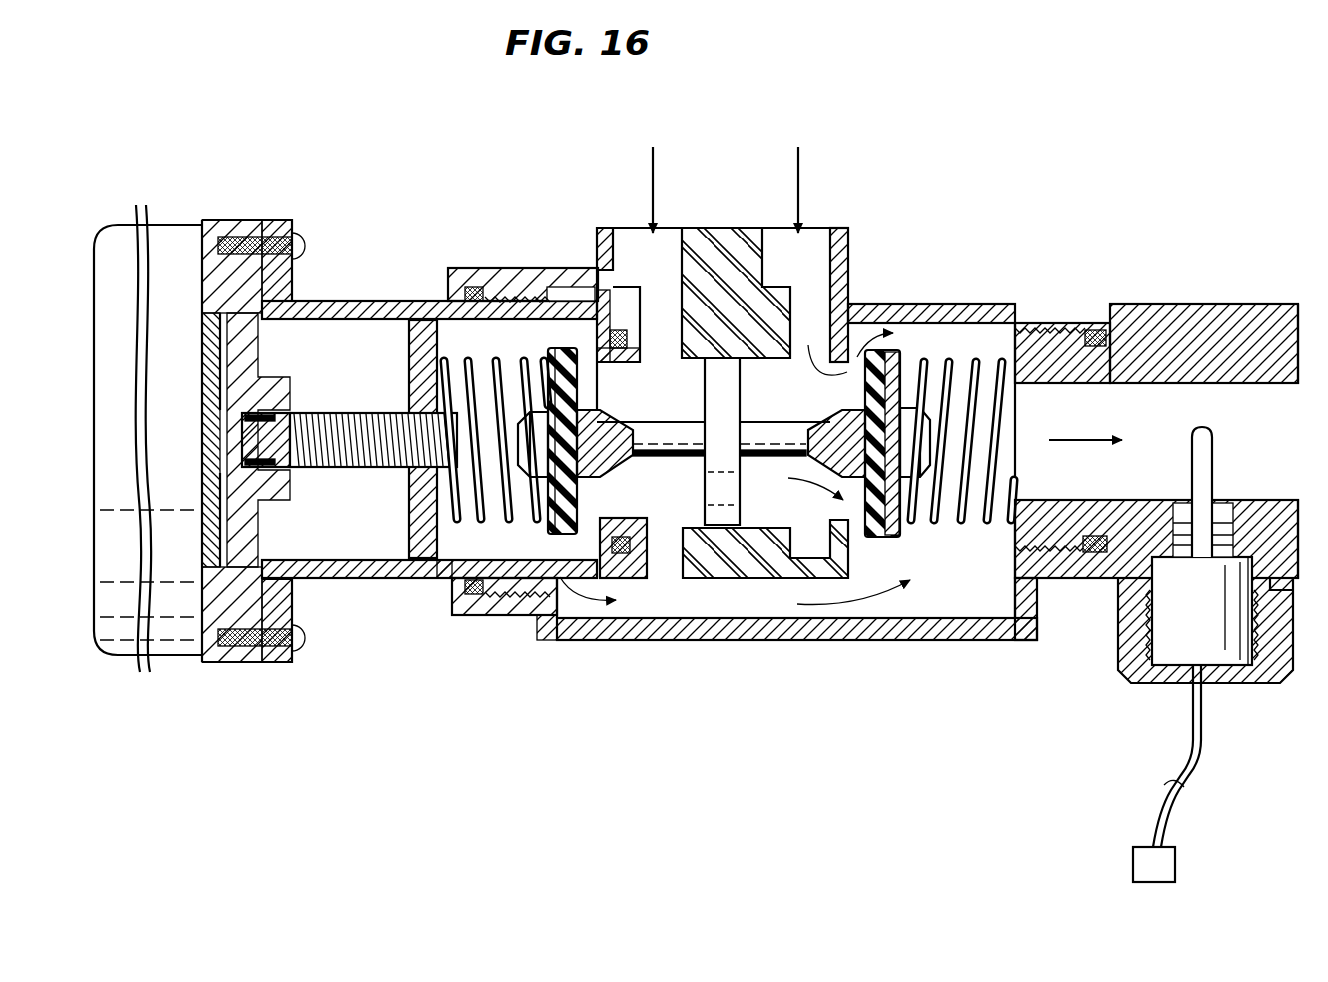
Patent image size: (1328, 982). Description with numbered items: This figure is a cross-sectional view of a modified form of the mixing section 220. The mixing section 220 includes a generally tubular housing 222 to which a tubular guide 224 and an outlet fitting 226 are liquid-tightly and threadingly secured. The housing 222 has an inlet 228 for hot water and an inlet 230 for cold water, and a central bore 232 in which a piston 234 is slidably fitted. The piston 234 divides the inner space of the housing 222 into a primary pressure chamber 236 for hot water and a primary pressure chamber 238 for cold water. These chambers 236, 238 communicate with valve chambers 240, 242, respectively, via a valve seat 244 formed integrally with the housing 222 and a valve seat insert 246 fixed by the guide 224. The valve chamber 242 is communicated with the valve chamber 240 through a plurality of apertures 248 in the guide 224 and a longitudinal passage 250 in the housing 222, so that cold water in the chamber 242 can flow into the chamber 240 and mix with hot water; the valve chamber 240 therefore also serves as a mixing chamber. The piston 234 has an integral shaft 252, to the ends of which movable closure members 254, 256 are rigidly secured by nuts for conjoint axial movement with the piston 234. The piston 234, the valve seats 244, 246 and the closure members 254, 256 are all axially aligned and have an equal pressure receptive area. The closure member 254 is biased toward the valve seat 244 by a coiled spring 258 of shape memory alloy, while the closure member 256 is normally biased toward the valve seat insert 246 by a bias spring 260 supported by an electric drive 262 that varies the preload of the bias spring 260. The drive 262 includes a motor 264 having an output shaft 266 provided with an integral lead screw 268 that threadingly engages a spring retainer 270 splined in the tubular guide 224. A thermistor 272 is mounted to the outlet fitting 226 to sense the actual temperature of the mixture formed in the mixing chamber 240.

The mixing section 220 is at (952, 146).
The housing 222 is at (812, 621).
The tubular guide 224 is at (333, 299).
The outlet fitting 226 is at (1277, 320).
The inlet 228 is at (817, 250).
The inlet 230 is at (637, 258).
The central bore 232 is at (672, 528).
The piston 234 is at (722, 530).
The primary pressure chamber 236 is at (800, 410).
The primary pressure chamber 238 is at (690, 410).
The valve chamber 240 is at (963, 340).
The valve chamber 242 is at (495, 336).
The valve seat 244 is at (865, 625).
The valve seat insert 246 is at (565, 352).
The apertures 248 is at (575, 300).
The longitudinal passage 250 is at (740, 596).
The shaft 252 is at (668, 440).
The closure member 254 is at (990, 528).
The closure member 256 is at (532, 618).
The coiled spring 258 is at (1037, 588).
The bias spring 260 is at (437, 580).
The electric drive 262 is at (343, 604).
The motor 264 is at (138, 657).
The output shaft 266 is at (295, 422).
The lead screw 268 is at (367, 418).
The spring retainer 270 is at (416, 318).
The thermistor 272 is at (1183, 642).